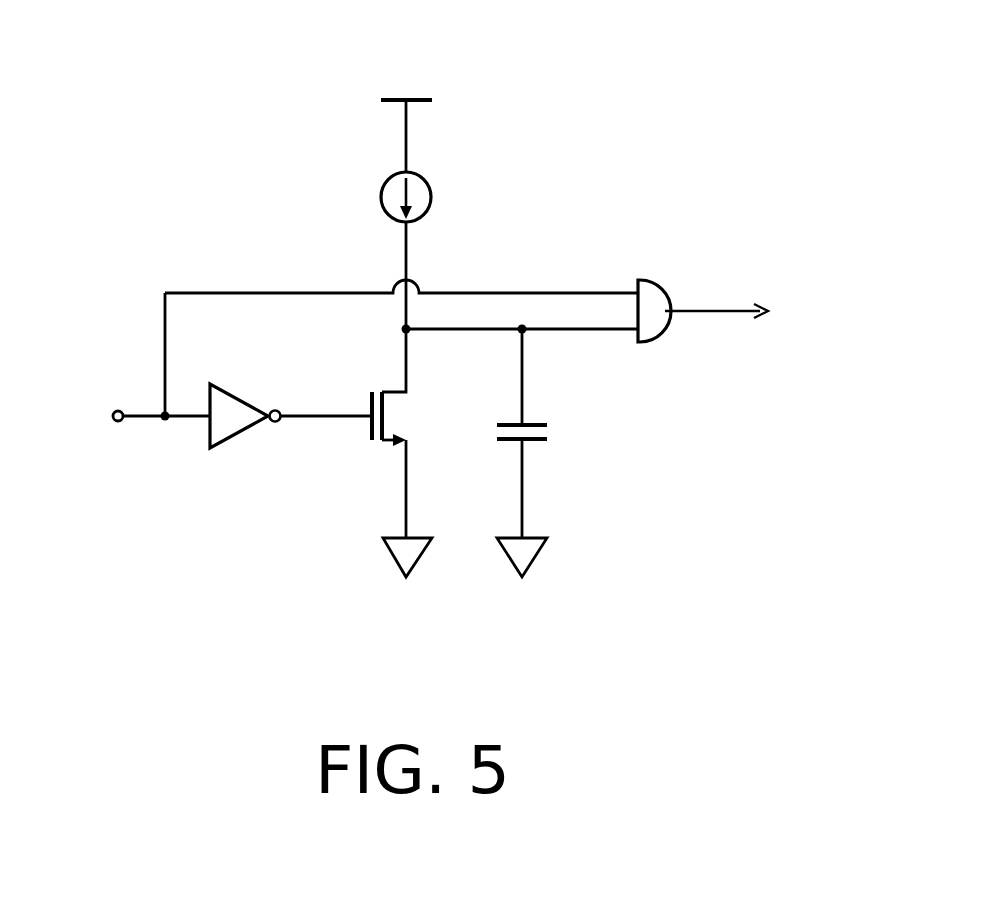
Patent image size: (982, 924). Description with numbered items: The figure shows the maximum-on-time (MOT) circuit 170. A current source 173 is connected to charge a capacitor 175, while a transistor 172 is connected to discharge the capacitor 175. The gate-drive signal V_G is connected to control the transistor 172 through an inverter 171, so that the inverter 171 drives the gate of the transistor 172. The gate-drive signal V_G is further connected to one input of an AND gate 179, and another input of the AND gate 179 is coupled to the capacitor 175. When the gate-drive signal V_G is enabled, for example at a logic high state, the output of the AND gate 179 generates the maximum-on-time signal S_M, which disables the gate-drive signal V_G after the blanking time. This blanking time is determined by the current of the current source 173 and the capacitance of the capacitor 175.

The maximum-on-time circuit 170 is at (815, 57).
The inverter 171 is at (240, 440).
The transistor 172 is at (392, 442).
The current source 173 is at (381, 195).
The capacitor 175 is at (545, 432).
The AND gate 179 is at (651, 283).